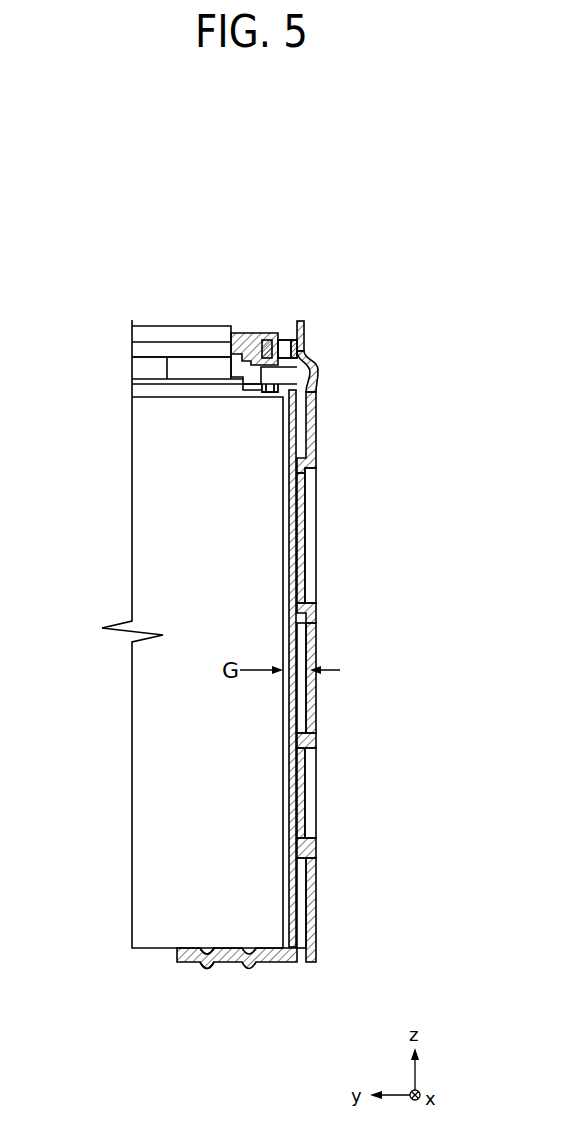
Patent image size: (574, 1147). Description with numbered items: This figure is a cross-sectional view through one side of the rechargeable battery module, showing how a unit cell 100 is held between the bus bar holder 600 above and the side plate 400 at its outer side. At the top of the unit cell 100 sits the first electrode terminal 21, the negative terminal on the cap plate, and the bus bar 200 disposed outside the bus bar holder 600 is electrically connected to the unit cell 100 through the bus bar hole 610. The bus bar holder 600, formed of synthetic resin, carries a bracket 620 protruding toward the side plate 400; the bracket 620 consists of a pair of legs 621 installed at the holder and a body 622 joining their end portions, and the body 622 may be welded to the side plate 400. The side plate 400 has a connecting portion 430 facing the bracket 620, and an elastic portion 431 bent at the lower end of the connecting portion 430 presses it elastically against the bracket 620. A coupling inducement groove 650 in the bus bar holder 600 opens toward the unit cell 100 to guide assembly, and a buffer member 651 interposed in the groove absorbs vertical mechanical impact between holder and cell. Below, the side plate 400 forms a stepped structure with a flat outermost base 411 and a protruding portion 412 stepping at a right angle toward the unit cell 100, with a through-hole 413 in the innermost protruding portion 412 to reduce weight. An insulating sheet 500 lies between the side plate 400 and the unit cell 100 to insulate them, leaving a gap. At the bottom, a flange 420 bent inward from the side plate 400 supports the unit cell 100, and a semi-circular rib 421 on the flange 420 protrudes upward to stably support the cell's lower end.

The unit cell 100 is at (157, 802).
The bus bar 200 is at (157, 347).
The first electrode terminal 21 is at (176, 370).
The bus bar holder 600 is at (252, 333).
The bus bar hole 610 is at (230, 348).
The bracket 620 is at (333, 264).
The leg 621 is at (280, 340).
The body 622 is at (292, 340).
The coupling inducement groove 650 is at (262, 392).
The buffer member 651 is at (275, 392).
The side plate 400 is at (304, 970).
The base 411 is at (316, 412).
The protruding portion 412 is at (316, 478).
The through-hole 413 is at (316, 568).
The flange 420 is at (235, 962).
The rib 421 is at (198, 948).
The connecting portion 430 is at (304, 331).
The elastic portion 431 is at (318, 371).
The insulating sheet 500 is at (290, 912).